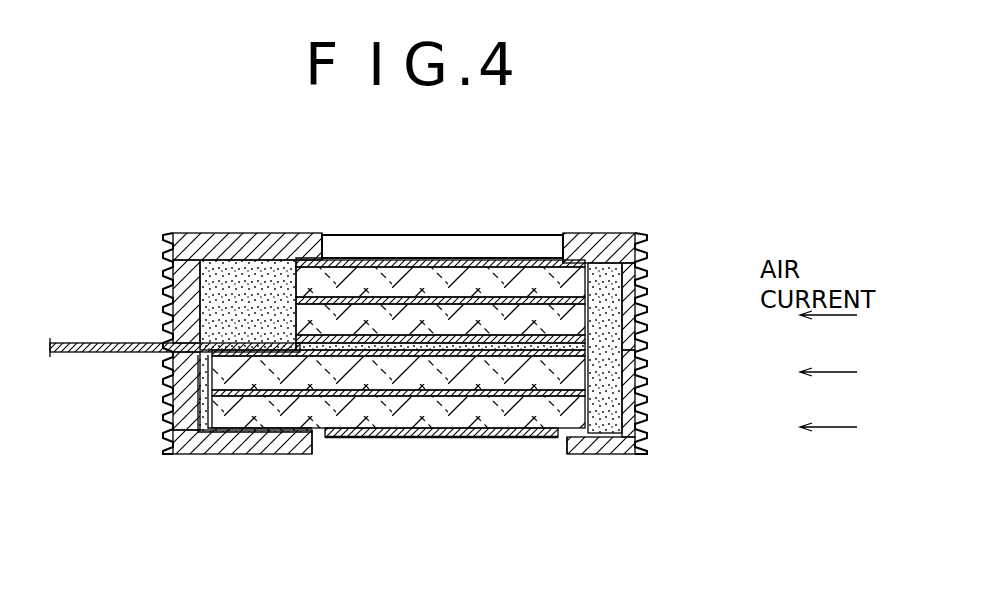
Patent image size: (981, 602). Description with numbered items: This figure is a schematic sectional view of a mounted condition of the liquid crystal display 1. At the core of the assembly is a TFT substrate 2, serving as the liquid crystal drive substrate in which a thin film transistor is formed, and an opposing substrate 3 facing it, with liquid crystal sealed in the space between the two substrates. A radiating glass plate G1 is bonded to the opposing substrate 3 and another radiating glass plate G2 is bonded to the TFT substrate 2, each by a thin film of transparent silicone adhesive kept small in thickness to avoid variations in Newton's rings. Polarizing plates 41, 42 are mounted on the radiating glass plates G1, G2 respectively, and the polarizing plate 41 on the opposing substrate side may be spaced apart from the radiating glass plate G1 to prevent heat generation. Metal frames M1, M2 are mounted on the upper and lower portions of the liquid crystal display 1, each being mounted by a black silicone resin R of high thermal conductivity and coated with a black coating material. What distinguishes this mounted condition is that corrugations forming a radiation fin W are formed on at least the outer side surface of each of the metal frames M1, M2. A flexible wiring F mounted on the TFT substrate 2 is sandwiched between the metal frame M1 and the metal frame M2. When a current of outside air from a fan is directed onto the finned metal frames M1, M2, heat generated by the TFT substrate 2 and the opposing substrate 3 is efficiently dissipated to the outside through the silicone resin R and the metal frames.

The liquid crystal display 1 is at (351, 235).
The TFT substrate 2 is at (390, 380).
The opposing substrate 3 is at (442, 315).
The polarizing plate 41 is at (386, 262).
The polarizing plate 42 is at (527, 437).
The radiating glass plate G1 is at (518, 285).
The radiating glass plate G2 is at (452, 432).
The metal frame M1 is at (195, 232).
The metal frame M2 is at (178, 405).
The black silicone resin R is at (250, 270).
The radiation fin W is at (165, 318).
The flexible wiring F is at (77, 343).